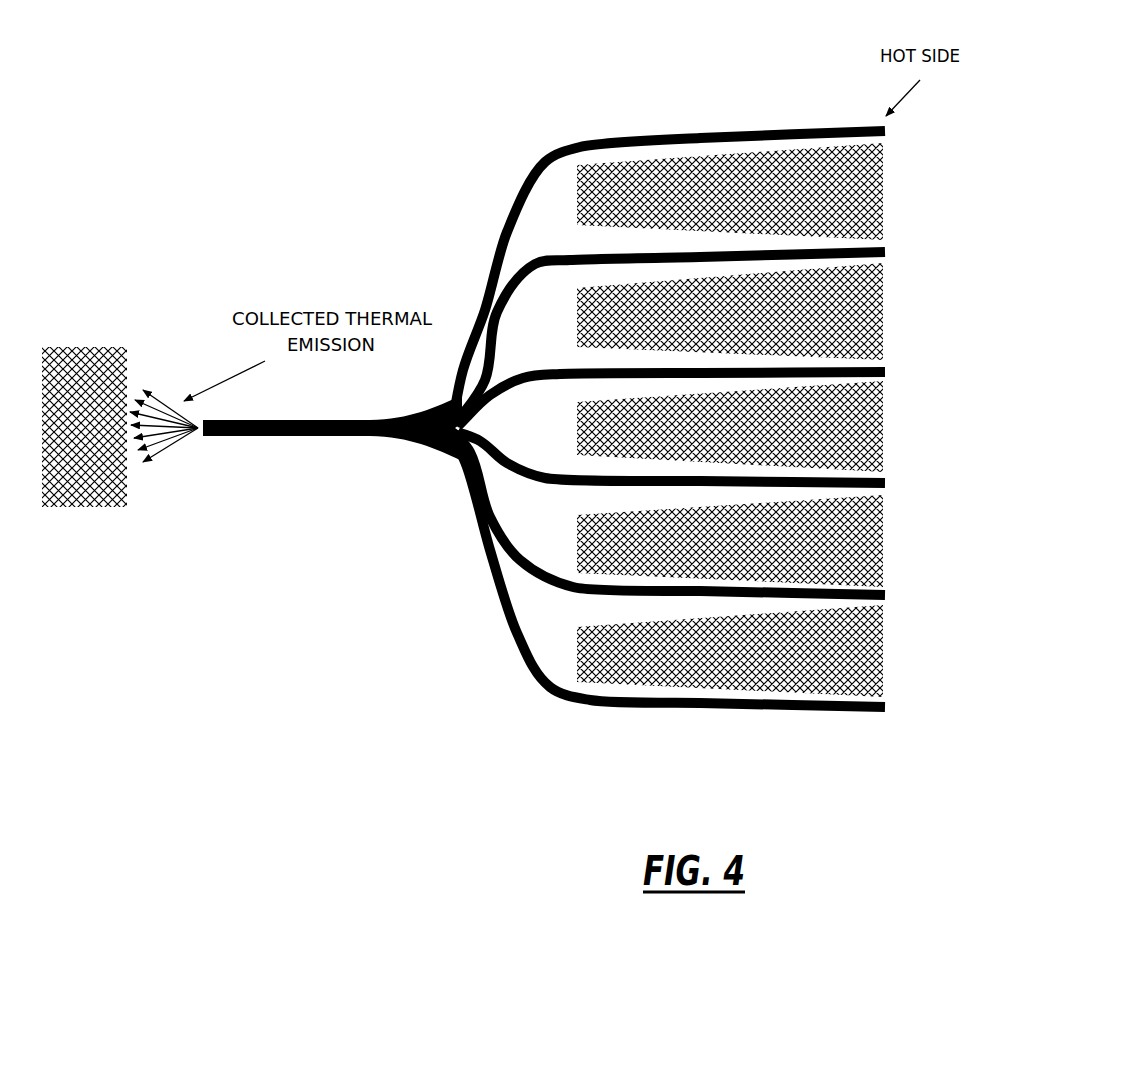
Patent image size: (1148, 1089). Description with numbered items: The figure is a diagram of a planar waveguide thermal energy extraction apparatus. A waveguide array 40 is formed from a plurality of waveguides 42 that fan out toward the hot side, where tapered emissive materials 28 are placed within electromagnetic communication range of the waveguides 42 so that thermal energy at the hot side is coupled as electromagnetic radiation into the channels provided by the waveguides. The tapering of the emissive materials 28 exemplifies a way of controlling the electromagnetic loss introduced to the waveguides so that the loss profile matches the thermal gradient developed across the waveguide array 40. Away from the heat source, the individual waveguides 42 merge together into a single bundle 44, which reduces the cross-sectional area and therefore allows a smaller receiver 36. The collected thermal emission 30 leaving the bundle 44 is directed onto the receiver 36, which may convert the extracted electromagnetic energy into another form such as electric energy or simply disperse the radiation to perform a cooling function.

The emissive materials 28 is at (877, 647).
The collected thermal emission 30 is at (158, 436).
The receiver 36 is at (100, 352).
The waveguide array 40 is at (655, 380).
The waveguides 42 is at (602, 137).
The bundle 44 is at (292, 437).